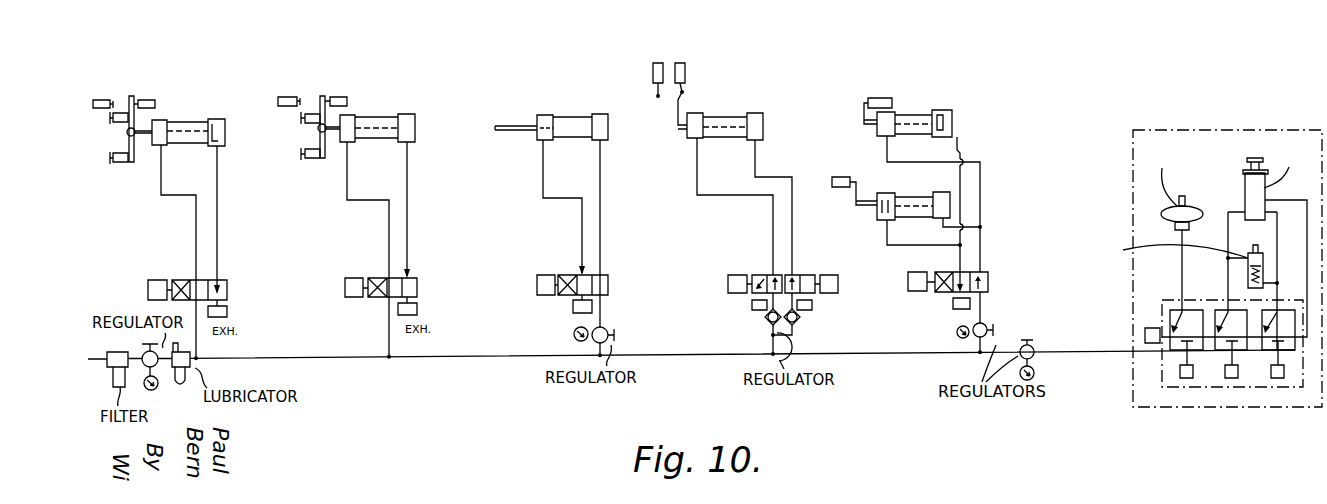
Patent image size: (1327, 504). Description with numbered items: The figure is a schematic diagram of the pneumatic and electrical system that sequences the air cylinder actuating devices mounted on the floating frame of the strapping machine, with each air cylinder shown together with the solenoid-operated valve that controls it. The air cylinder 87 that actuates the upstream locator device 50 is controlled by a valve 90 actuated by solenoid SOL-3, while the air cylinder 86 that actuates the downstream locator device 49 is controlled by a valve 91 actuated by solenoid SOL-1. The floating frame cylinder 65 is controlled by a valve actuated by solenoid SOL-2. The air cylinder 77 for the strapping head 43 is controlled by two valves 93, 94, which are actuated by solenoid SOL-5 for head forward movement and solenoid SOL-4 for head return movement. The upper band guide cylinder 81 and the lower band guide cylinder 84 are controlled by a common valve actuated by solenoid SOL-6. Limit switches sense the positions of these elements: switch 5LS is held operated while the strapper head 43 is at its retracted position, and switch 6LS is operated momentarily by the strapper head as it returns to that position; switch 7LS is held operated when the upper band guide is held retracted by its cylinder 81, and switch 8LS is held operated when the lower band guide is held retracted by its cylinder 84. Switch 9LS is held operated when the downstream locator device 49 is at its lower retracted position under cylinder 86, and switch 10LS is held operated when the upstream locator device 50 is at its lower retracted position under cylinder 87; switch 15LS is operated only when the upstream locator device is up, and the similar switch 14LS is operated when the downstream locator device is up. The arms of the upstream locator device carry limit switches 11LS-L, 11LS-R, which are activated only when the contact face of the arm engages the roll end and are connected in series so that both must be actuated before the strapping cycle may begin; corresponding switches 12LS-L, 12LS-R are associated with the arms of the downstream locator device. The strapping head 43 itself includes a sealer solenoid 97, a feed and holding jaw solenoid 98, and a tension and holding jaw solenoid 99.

The strapper head unit 43 is at (1179, 280).
The downstream locator device 49 is at (322, 86).
The upstream locator device 50 is at (131, 86).
The floating frame cylinder 65 is at (568, 125).
The air cylinder for the strapping head 77 is at (721, 115).
The upper band guide air cylinder 81 is at (918, 112).
The lower band guide air cylinder 84 is at (913, 197).
The air cylinder 86 is at (376, 115).
The air cylinder 87 is at (191, 120).
The valve 90 is at (228, 284).
The valve 91 is at (418, 287).
The valve 93 is at (763, 275).
The valve 94 is at (811, 275).
The sealer solenoid 97 is at (1187, 378).
The feed and holding jaw solenoid 98 is at (1232, 378).
The tension and holding jaw solenoid 99 is at (1278, 378).
The limit switch 15LS is at (101, 100).
The limit switch 10LS is at (150, 100).
The limit switch 11LS-L is at (120, 123).
The limit switch 11LS-R is at (124, 163).
The limit switch 14LS is at (284, 97).
The limit switch 9LS is at (347, 100).
The limit switch 12LS-L is at (309, 124).
The limit switch 12LS-R is at (312, 160).
The limit switch 6LS is at (656, 63).
The limit switch 5LS is at (681, 63).
The limit switch 7LS is at (883, 98).
The limit switch 8LS is at (838, 177).
The solenoid SOL-1 is at (352, 278).
The solenoid SOL-2 is at (546, 275).
The solenoid SOL-3 is at (159, 280).
The solenoid SOL-4 is at (838, 285).
The solenoid SOL-5 is at (727, 289).
The solenoid SOL-6 is at (917, 272).